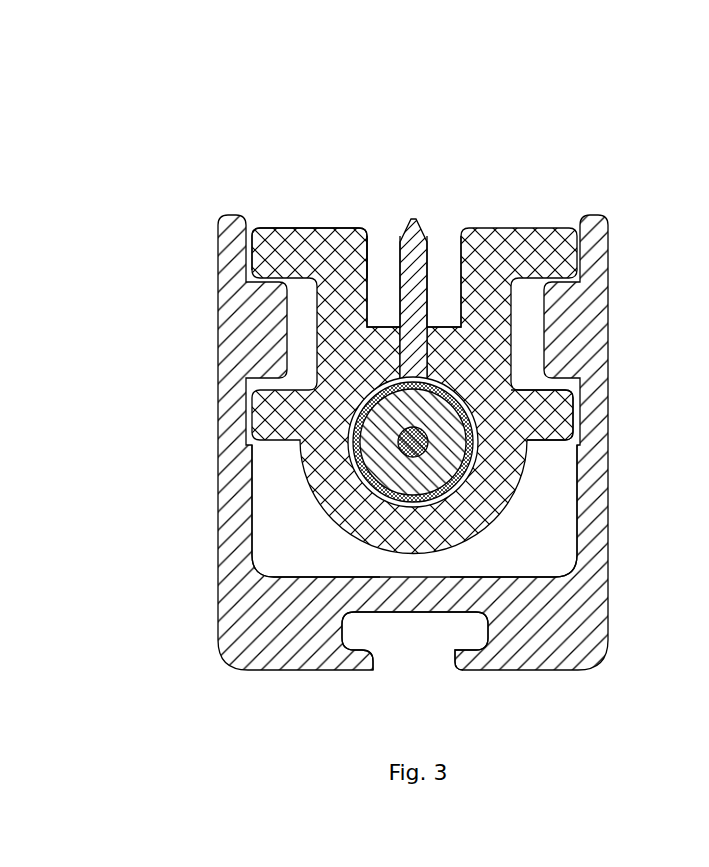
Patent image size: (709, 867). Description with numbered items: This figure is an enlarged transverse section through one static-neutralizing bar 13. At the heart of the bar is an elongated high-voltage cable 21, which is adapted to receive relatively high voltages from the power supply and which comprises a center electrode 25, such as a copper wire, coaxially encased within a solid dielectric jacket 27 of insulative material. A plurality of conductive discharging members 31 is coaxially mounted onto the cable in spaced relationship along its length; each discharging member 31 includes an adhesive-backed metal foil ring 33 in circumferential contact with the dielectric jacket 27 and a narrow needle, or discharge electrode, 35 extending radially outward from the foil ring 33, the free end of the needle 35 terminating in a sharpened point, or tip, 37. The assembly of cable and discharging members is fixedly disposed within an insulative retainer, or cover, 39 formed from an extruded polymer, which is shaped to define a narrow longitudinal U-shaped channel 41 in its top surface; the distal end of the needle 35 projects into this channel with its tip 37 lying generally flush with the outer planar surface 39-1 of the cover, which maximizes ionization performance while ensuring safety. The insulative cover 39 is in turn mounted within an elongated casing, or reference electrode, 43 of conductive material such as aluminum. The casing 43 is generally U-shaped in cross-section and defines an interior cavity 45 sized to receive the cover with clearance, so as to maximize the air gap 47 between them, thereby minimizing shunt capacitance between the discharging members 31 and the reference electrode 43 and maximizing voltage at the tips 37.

The static-neutralizing bar 13 is at (149, 673).
The elongated cable 21 is at (455, 465).
The center electrode 25 is at (400, 450).
The dielectric jacket 27 is at (382, 420).
The conductive discharging member 31 is at (428, 281).
The metal foil ring 33 is at (458, 393).
The needle 35 is at (427, 250).
The sharpened tip 37 is at (413, 218).
The insulative cover 39 is at (563, 413).
The outer planar surface 39-1 is at (277, 228).
The U-shaped channel 41 is at (382, 224).
The conductive casing 43 is at (558, 672).
The interior cavity 45 is at (262, 528).
The air gap 47 is at (557, 455).